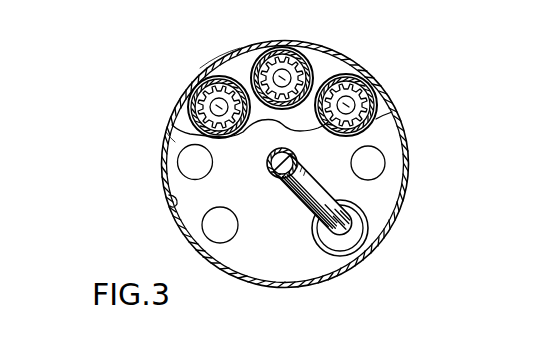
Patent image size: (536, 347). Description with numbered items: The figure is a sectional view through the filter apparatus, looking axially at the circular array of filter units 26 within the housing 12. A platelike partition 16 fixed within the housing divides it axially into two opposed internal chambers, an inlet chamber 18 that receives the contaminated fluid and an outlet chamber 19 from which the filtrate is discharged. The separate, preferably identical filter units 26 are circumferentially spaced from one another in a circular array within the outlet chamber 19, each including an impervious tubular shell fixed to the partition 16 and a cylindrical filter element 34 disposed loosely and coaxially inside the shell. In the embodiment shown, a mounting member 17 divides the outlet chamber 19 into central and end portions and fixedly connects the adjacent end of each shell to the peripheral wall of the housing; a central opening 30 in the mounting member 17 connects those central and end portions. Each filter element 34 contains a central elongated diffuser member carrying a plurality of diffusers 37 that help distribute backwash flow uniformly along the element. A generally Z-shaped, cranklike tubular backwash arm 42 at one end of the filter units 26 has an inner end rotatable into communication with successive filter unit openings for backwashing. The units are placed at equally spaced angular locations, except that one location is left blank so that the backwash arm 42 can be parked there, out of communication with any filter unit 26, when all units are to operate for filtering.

The housing 12 is at (388, 94).
The partition 16 is at (167, 135).
The mounting member 17 is at (183, 108).
The chamber 18 is at (170, 198).
The chamber 19 is at (222, 68).
The filter units 26 is at (254, 62).
The central opening 30 is at (282, 141).
The filter element 34 is at (298, 47).
The diffusers 37 is at (279, 68).
The backwash arm 42 is at (284, 184).